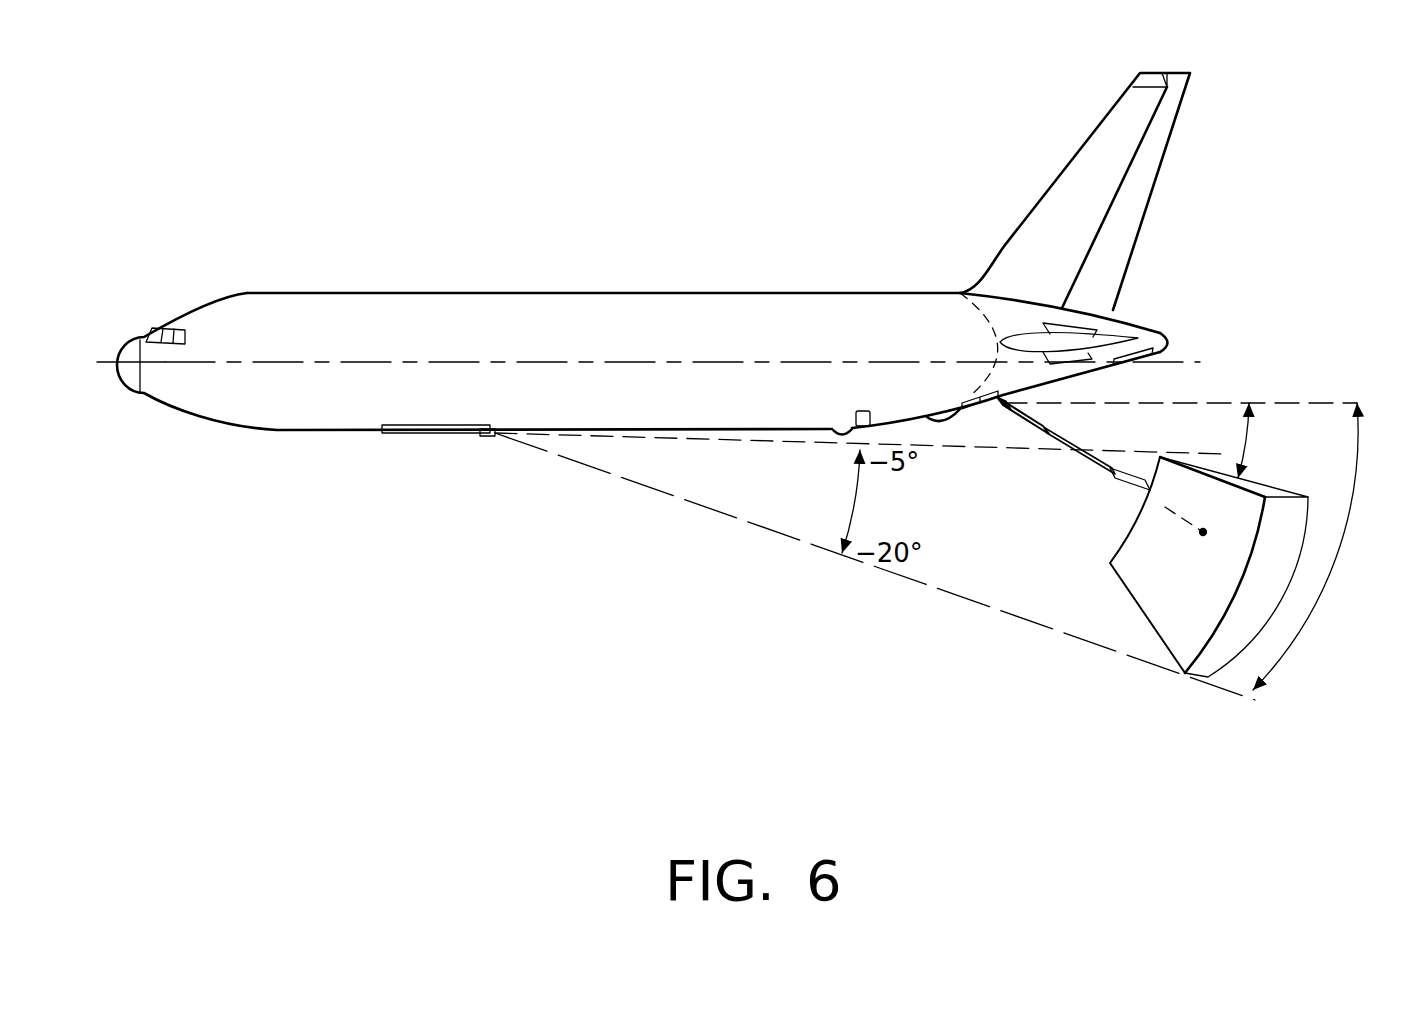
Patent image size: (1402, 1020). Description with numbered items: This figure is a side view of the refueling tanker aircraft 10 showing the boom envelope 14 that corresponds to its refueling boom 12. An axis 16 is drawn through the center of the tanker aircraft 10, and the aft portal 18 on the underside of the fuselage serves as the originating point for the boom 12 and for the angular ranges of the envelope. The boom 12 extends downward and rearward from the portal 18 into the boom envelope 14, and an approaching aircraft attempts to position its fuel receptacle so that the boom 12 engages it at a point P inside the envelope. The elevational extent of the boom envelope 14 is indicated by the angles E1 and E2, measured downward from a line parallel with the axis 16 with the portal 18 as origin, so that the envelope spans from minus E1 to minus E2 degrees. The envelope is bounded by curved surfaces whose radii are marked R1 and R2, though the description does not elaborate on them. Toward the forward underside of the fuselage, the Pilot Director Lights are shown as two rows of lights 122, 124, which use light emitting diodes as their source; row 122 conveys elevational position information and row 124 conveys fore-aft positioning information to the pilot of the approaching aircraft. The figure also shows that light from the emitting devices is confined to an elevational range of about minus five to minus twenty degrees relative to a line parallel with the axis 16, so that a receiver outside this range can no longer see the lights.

The refueling tanker aircraft 10 is at (498, 293).
The boom 12 is at (1087, 462).
The boom envelope 14 is at (1137, 608).
The axis 16 is at (352, 362).
The boom portal 18 is at (993, 405).
The row of lights 122 is at (405, 437).
The row of lights 124 is at (487, 432).
The point P is at (1205, 531).
The radius of curvature 1 R1 is at (1130, 533).
The radius of curvature 2 R2 is at (1225, 620).
The elevational angle E1 is at (1243, 446).
The elevational angle E2 is at (1303, 622).